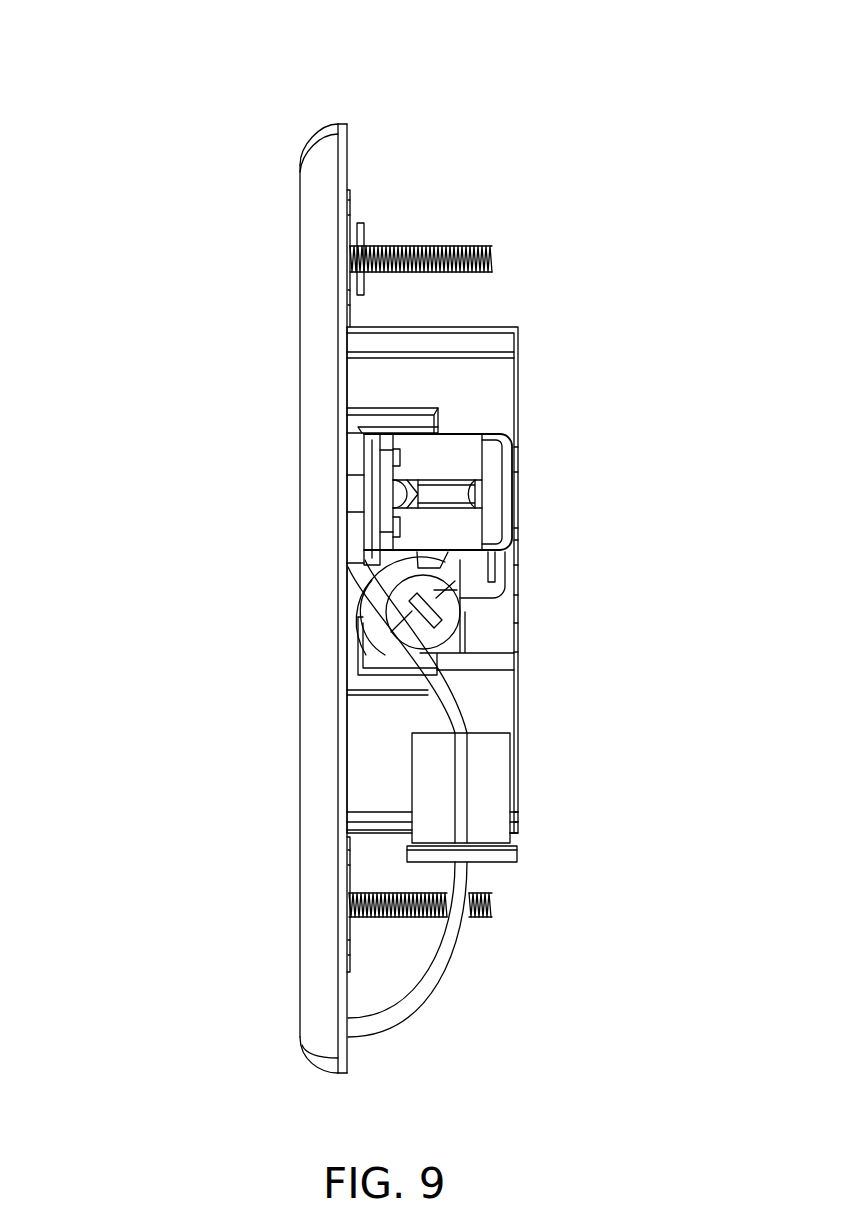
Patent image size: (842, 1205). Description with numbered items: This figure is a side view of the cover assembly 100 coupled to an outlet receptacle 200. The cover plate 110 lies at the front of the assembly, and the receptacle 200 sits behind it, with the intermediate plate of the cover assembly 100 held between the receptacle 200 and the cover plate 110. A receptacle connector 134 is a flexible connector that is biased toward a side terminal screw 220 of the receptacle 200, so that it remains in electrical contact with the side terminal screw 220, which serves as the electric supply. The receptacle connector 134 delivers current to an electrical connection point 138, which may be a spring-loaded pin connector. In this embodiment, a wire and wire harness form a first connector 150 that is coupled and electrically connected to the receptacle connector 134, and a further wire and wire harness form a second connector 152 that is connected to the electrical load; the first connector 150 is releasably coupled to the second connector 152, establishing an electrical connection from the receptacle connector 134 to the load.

The cover assembly 100 is at (233, 119).
The cover plate 110 is at (322, 203).
The outlet receptacle 200 is at (627, 407).
The receptacle connector 134 is at (490, 472).
The electrical connection point 138 is at (350, 495).
The side terminal screw 220 is at (438, 628).
The first connector 150 is at (475, 752).
The second connector 152 is at (482, 855).